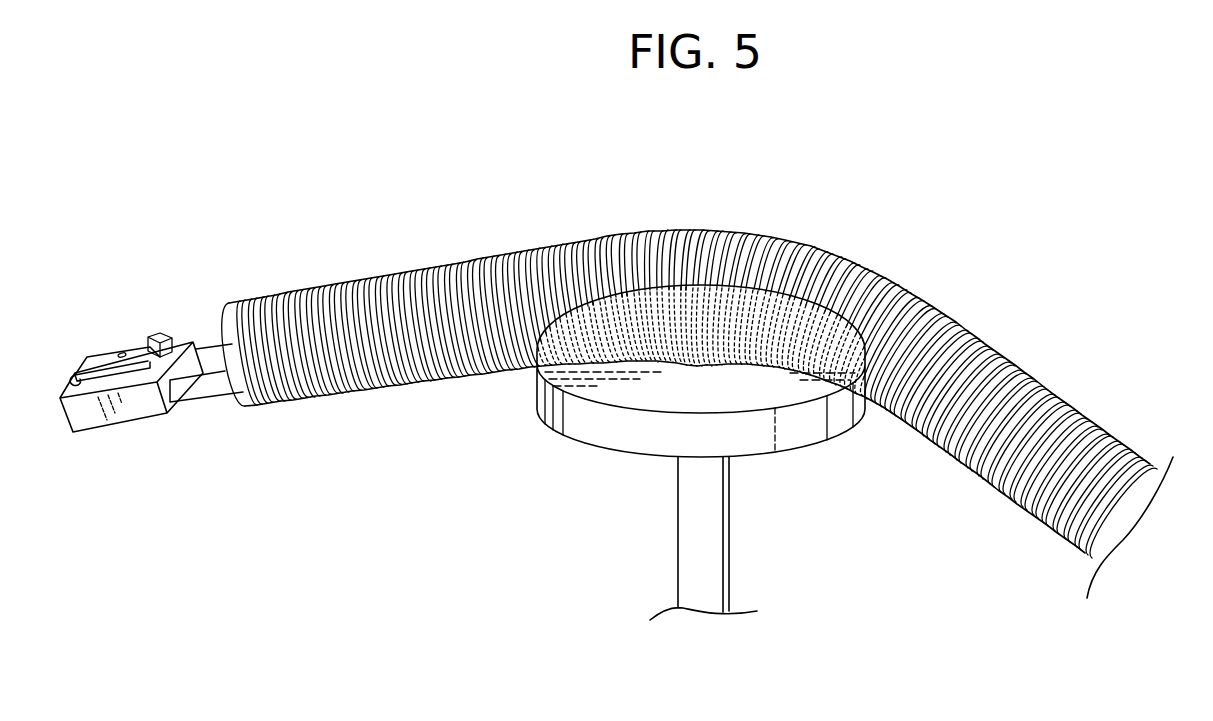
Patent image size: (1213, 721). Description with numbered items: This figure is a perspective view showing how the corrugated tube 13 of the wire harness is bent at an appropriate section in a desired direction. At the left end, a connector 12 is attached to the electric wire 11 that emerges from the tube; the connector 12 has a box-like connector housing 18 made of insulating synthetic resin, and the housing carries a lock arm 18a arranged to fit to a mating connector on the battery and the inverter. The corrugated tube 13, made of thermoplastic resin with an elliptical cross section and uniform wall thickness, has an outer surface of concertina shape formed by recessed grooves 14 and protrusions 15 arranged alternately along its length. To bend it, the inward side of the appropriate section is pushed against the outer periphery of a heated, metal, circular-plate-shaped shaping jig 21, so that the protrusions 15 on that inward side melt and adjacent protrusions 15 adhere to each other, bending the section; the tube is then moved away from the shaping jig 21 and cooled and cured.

The electric wire 11 is at (198, 368).
The connector 12 is at (85, 434).
The corrugated tube 13 is at (413, 386).
The recessed groove 14 is at (730, 226).
The protrusion 15 is at (785, 240).
The connector housing 18 is at (119, 414).
The lock arm 18a is at (104, 359).
The shaping jig 21 is at (810, 423).